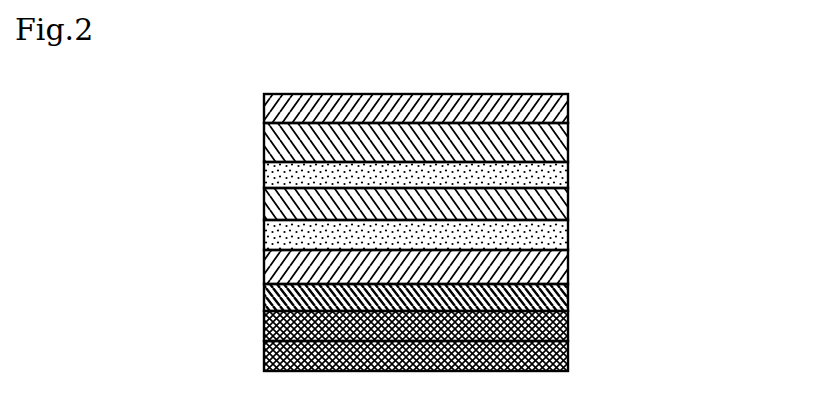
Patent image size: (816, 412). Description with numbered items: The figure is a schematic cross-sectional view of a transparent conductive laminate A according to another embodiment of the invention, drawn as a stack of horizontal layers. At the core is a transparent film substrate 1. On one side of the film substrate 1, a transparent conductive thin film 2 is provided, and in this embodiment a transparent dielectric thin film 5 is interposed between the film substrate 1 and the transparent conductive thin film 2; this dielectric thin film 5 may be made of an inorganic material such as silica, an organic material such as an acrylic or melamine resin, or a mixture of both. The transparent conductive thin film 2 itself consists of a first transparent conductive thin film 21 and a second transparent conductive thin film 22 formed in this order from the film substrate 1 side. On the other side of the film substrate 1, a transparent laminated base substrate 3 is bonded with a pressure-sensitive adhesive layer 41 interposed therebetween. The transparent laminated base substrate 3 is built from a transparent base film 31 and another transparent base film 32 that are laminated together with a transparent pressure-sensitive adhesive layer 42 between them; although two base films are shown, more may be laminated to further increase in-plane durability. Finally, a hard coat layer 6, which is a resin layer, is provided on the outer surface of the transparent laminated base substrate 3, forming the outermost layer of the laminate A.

The transparent conductive laminate A is at (591, 75).
The hard coat layer 6 is at (568, 112).
The transparent laminated base substrate 3 is at (502, 171).
The transparent base film 32 is at (568, 147).
The transparent pressure-sensitive adhesive layer 42 is at (548, 182).
The transparent base film 31 is at (568, 212).
The pressure-sensitive adhesive layer 41 is at (548, 239).
The transparent film substrate 1 is at (568, 270).
The transparent dielectric thin film 5 is at (568, 305).
The transparent conductive thin film 2 is at (503, 344).
The first transparent conductive thin film 21 is at (568, 328).
The second transparent conductive thin film 22 is at (568, 357).